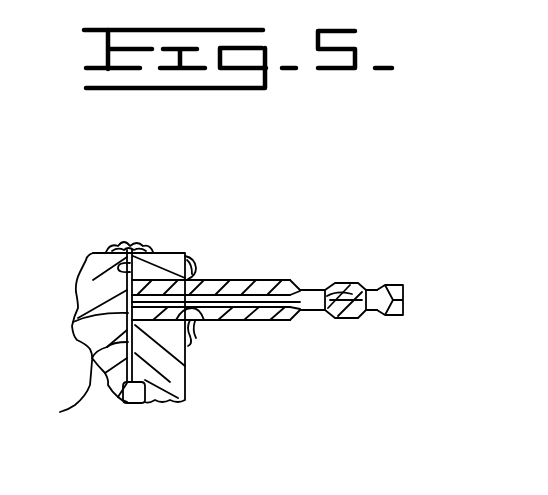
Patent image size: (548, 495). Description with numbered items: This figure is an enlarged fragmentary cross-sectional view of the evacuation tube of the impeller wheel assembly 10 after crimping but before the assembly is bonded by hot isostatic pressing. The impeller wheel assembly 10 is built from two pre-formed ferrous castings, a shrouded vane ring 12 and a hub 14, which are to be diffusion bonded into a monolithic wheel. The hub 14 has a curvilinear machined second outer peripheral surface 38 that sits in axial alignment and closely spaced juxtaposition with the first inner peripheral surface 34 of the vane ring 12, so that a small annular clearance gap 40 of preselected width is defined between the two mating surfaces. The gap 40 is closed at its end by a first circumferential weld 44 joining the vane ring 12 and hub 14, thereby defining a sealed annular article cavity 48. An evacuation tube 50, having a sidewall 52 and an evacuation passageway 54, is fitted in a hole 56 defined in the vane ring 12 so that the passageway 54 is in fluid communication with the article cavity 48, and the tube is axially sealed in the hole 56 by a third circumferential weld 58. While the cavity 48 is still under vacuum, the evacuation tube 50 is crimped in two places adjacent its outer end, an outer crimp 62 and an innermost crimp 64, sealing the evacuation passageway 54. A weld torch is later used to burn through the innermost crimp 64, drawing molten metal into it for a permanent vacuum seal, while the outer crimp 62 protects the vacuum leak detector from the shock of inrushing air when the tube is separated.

The impeller wheel assembly 10 is at (162, 187).
The vane ring 12 is at (188, 388).
The hub 14 is at (83, 270).
The first inner peripheral surface 34 is at (134, 259).
The second outer peripheral machined surface 38 is at (142, 406).
The annular clearance gap 40 is at (60, 412).
The first circumferential weld 44 is at (122, 248).
The annular article cavity 48 is at (77, 340).
The evacuation tube 50 is at (257, 323).
The sidewall 52 is at (272, 280).
The evacuation passageway 54 is at (283, 302).
The hole 56 is at (200, 324).
The third circumferential weld 58 is at (198, 272).
The outer crimp 62 is at (378, 316).
The innermost crimp 64 is at (323, 289).